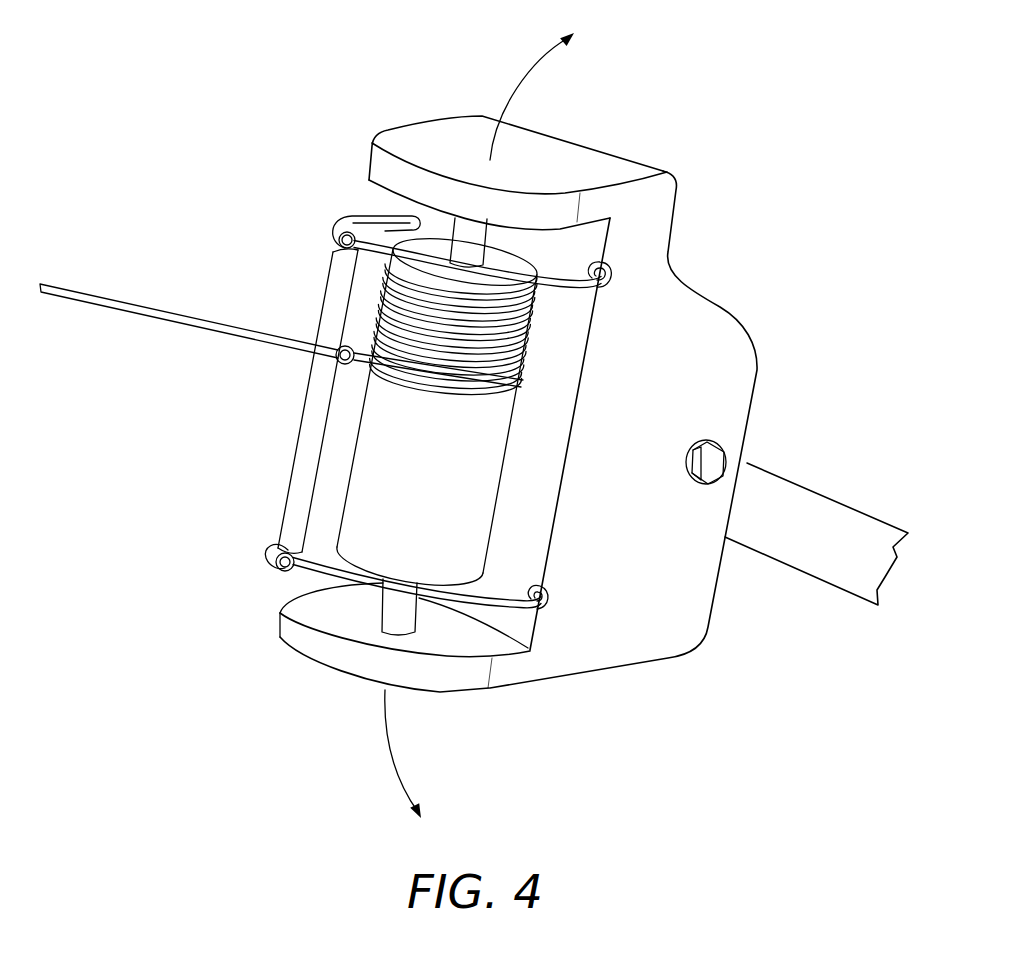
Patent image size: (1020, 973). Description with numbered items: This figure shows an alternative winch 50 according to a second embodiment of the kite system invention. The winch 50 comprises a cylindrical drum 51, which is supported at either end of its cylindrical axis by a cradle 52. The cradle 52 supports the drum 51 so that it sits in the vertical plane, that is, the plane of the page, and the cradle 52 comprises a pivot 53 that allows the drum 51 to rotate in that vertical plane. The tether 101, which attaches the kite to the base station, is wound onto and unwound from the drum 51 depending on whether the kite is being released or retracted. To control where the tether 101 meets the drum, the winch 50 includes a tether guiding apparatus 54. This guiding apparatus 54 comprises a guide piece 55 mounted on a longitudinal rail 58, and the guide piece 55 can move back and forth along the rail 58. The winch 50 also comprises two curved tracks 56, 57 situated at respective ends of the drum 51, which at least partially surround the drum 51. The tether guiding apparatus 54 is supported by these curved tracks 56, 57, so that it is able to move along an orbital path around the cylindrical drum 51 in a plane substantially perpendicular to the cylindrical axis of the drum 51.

The winch 50 is at (684, 725).
The drum 51 is at (372, 427).
The cradle 52 is at (573, 158).
The pivot 53 is at (721, 467).
The tether guiding apparatus 54 is at (282, 571).
The guide piece 55 is at (345, 344).
The curved track 56 is at (353, 219).
The curved track 57 is at (360, 588).
The longitudinal rail 58 is at (300, 460).
The tether 101 is at (152, 310).